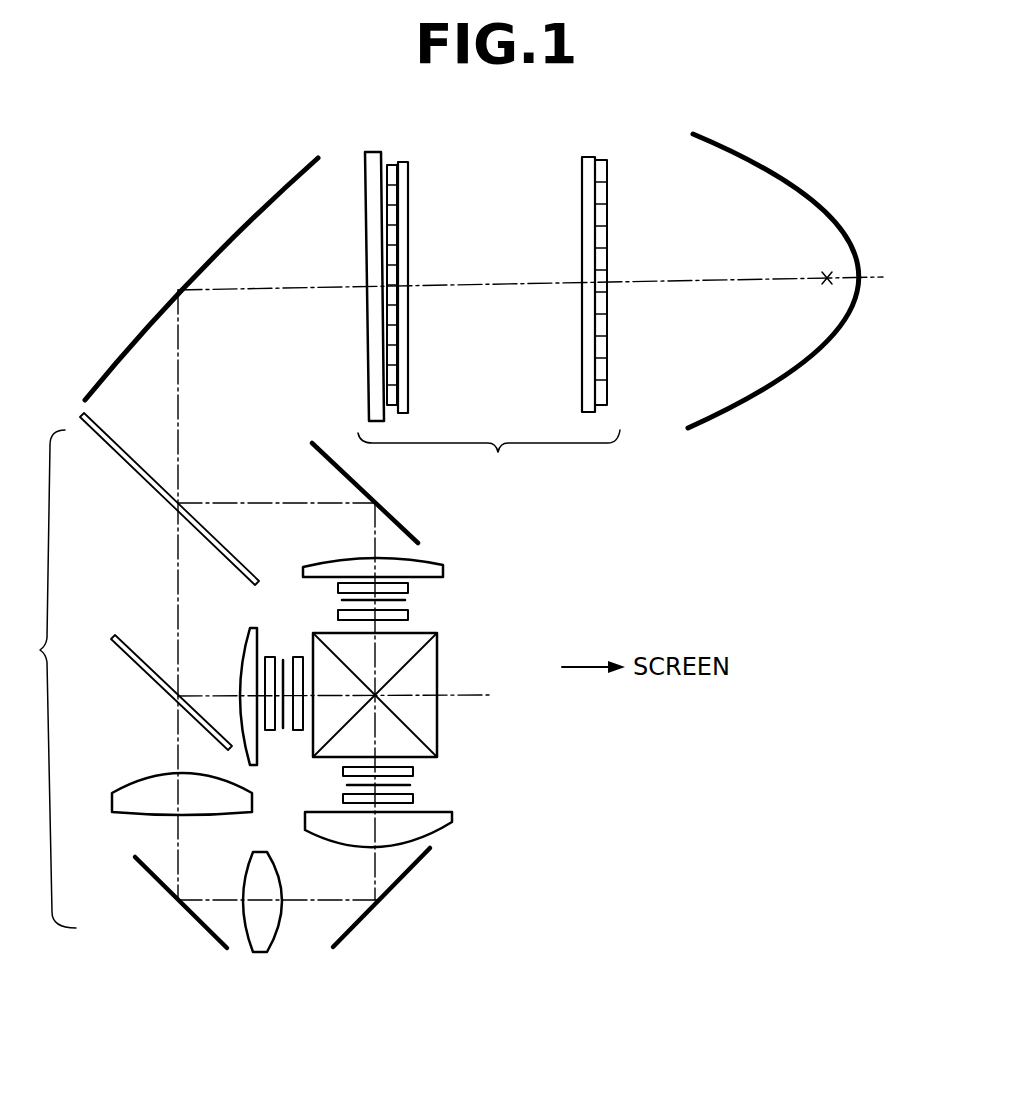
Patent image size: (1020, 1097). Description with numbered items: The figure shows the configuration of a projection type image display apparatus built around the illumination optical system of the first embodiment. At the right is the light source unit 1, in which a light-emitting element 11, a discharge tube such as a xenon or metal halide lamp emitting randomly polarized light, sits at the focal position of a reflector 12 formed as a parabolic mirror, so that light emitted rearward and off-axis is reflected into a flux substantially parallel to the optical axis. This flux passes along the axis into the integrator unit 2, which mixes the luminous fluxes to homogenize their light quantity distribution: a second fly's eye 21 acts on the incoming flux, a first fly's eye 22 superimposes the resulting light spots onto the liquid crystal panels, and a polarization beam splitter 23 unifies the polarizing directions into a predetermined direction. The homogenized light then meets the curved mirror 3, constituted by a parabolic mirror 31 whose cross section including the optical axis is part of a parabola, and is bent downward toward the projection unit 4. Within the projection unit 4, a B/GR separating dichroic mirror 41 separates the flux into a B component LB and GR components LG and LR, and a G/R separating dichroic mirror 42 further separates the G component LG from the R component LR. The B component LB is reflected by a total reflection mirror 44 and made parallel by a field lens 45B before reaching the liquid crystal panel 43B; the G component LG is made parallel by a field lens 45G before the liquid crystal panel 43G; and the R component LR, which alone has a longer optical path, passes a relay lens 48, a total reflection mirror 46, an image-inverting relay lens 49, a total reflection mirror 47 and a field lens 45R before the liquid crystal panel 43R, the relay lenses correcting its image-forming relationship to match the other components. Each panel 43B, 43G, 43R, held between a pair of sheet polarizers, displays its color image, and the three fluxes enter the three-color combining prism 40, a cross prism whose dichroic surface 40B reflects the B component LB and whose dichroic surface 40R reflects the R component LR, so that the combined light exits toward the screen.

The light source unit 1 is at (773, 305).
The light-emitting element 11 is at (826, 273).
The reflector 12 is at (800, 364).
The integrator unit 2 is at (477, 288).
The second fly's eye 21 is at (592, 157).
The first fly's eye 22 is at (405, 164).
The polarization beam splitter 23 is at (373, 150).
The curved mirror 3 is at (201, 279).
The parabolic mirror 31 is at (262, 217).
The projection unit 4 is at (277, 673).
The B/GR separating dichroic mirror 41 is at (140, 481).
The G/R separating dichroic mirror 42 is at (130, 633).
The liquid crystal panel 43B is at (428, 596).
The liquid crystal panel 43G is at (285, 640).
The liquid crystal panel 43R is at (430, 784).
The total reflection mirror 44 is at (313, 449).
The field lens 45B is at (445, 565).
The field lens 45G is at (240, 640).
The field lens 45R is at (450, 818).
The total reflection mirror 46 is at (140, 858).
The total reflection mirror 47 is at (342, 940).
The relay lens 48 is at (136, 786).
The image-inverting relay lens 49 is at (268, 880).
The three-color combining prism 40 is at (415, 676).
The dichroic surface 40R is at (437, 645).
The dichroic surface 40B is at (420, 735).
The B component LB is at (250, 502).
The G component LG is at (203, 694).
The R component LR is at (190, 864).